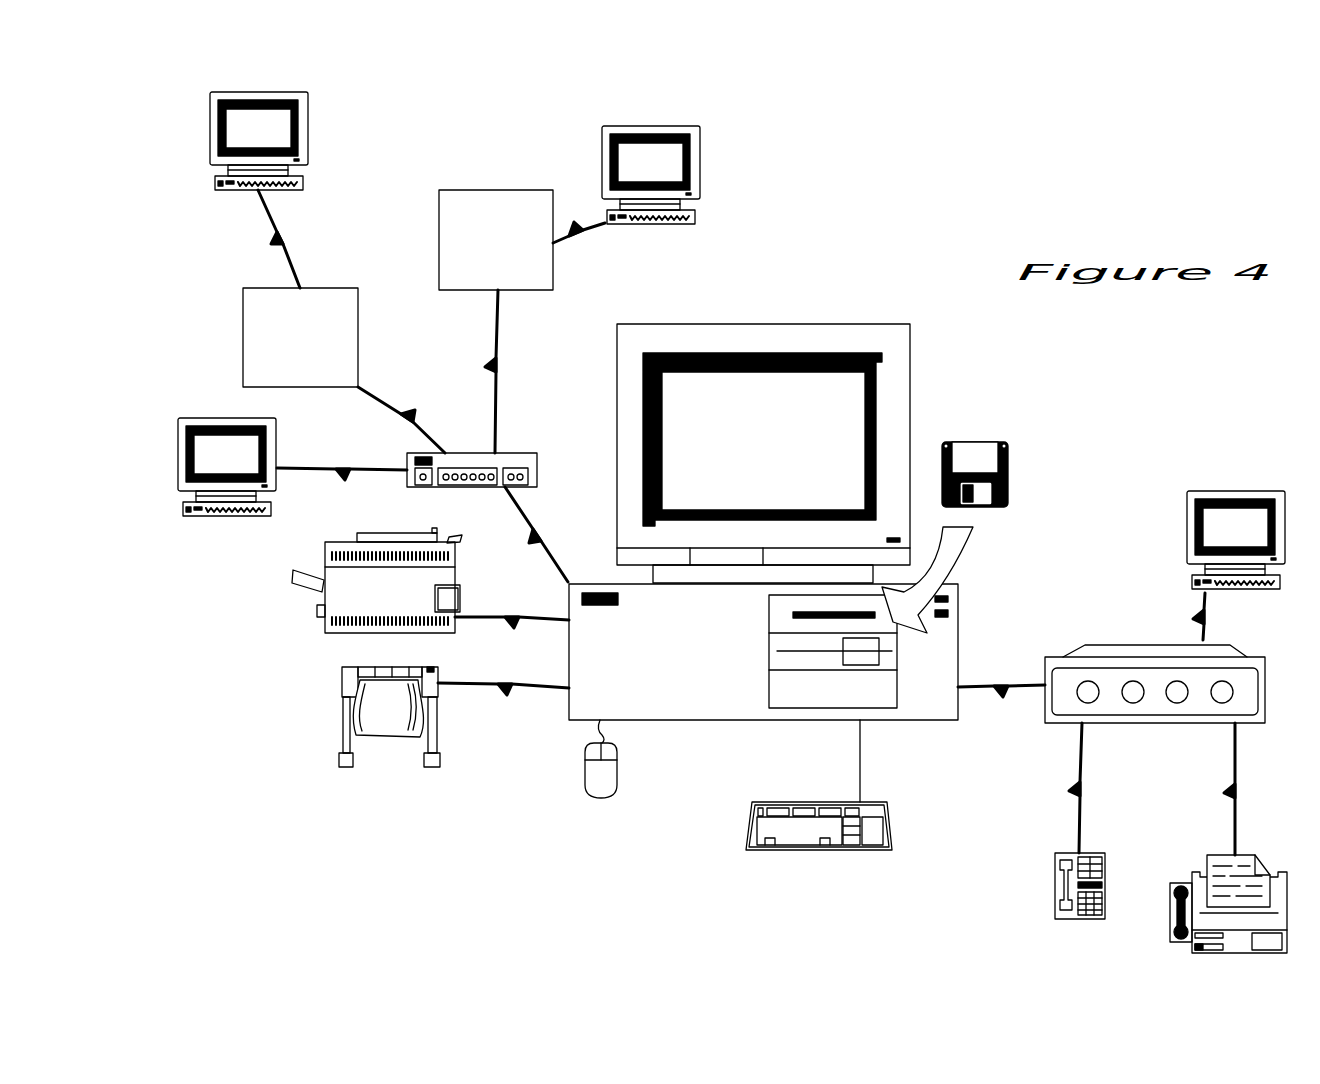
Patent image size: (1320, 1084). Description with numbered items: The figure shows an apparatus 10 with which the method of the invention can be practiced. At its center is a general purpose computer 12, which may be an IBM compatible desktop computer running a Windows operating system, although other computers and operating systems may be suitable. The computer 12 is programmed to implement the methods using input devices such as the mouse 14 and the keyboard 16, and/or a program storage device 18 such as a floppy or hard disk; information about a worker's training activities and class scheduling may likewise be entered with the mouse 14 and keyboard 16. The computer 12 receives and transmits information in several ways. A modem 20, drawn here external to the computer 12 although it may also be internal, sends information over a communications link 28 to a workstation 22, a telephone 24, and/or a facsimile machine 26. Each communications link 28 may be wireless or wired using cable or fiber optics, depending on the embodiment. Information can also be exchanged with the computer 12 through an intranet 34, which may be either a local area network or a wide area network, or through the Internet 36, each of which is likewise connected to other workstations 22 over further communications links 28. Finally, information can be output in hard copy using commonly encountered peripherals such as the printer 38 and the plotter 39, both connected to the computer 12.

The apparatus 10 is at (858, 240).
The general purpose computer 12 is at (910, 388).
The mouse 14 is at (600, 785).
The keyboard 16 is at (751, 828).
The program storage device 18 is at (1010, 462).
The modem 20 is at (510, 453).
The workstation 22 is at (308, 122).
The telephone 24 is at (1055, 883).
The facsimile machine 26 is at (1230, 855).
The communications link 28 is at (281, 217).
The intranet 34 is at (286, 350).
The Internet 36 is at (482, 253).
The printer 38 is at (340, 598).
The plotter 39 is at (342, 697).